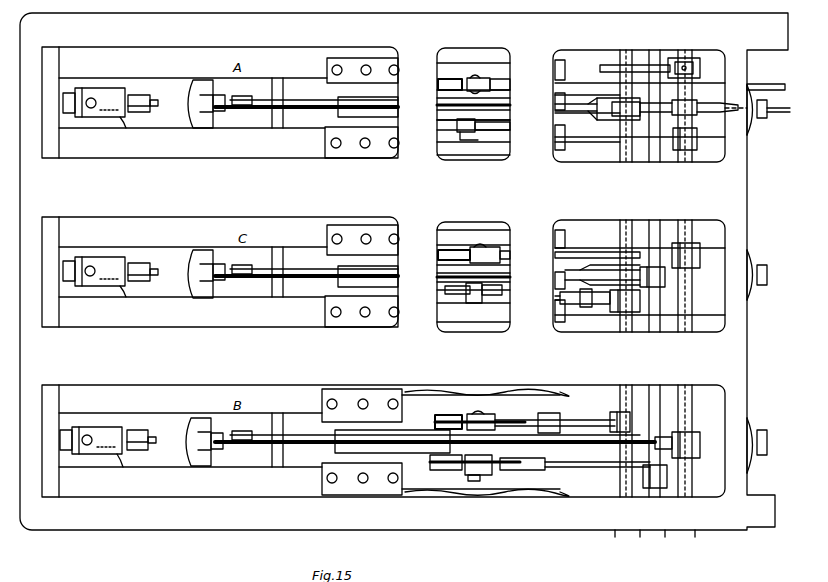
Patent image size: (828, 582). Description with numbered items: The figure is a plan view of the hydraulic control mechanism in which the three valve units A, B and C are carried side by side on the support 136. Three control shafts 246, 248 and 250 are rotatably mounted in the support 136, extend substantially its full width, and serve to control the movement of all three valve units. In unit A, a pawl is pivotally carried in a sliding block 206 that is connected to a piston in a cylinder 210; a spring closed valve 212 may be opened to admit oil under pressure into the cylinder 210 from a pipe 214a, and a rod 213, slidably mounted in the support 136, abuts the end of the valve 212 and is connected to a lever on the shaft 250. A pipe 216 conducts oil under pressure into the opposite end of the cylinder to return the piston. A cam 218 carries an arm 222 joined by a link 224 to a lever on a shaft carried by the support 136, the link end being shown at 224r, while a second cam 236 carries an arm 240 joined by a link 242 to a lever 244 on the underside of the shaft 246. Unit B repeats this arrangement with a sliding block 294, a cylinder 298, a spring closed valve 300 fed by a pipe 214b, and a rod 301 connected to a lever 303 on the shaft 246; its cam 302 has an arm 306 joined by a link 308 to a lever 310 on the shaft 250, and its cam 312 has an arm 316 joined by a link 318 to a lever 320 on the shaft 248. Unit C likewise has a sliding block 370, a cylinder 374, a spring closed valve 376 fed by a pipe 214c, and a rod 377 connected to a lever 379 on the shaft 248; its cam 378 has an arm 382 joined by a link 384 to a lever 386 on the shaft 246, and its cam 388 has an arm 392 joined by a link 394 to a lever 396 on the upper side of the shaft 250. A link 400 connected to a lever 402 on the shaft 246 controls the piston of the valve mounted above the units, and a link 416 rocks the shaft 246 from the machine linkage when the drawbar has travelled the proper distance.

The support 136 is at (187, 519).
The sliding block 206 is at (314, 84).
The cylinder 210 is at (193, 90).
The spring closed valve 212 is at (150, 96).
The rod 213 is at (292, 104).
The pipe 214a is at (91, 98).
The pipe 214b is at (88, 435).
The pipe 214c is at (90, 266).
The pipe 216 is at (615, 112).
The cam 218 is at (493, 79).
The arm 222 is at (470, 80).
The link 224 is at (512, 86).
The shaft end 224r is at (772, 84).
The cam 236 is at (512, 124).
The arm 240 is at (456, 123).
The link 242 is at (500, 134).
The lever 244 is at (698, 140).
The shaft 246 is at (693, 160).
The shaft 248 is at (655, 155).
The shaft 250 is at (625, 152).
The sliding block 294 is at (314, 420).
The cylinder 298 is at (187, 412).
The spring closed valve 300 is at (152, 431).
The rod 301 is at (292, 438).
The cam 302 is at (448, 414).
The lever 303 is at (702, 440).
The arm 306 is at (483, 413).
The link 308 is at (572, 419).
The lever 310 is at (616, 412).
The cam 312 is at (452, 471).
The arm 316 is at (482, 476).
The link 318 is at (528, 471).
The lever 320 is at (653, 489).
The sliding block 370 is at (314, 257).
The cylinder 374 is at (195, 260).
The spring closed valve 376 is at (152, 264).
The rod 377 is at (292, 273).
The cam 378 is at (455, 252).
The lever 379 is at (666, 278).
The arm 382 is at (487, 249).
The link 384 is at (576, 253).
The lever 386 is at (702, 250).
The cam 388 is at (450, 295).
The arm 392 is at (476, 300).
The link 394 is at (578, 305).
The lever 396 is at (640, 305).
The link 400 is at (610, 64).
The lever 402 is at (702, 66).
The link 416 is at (773, 112).